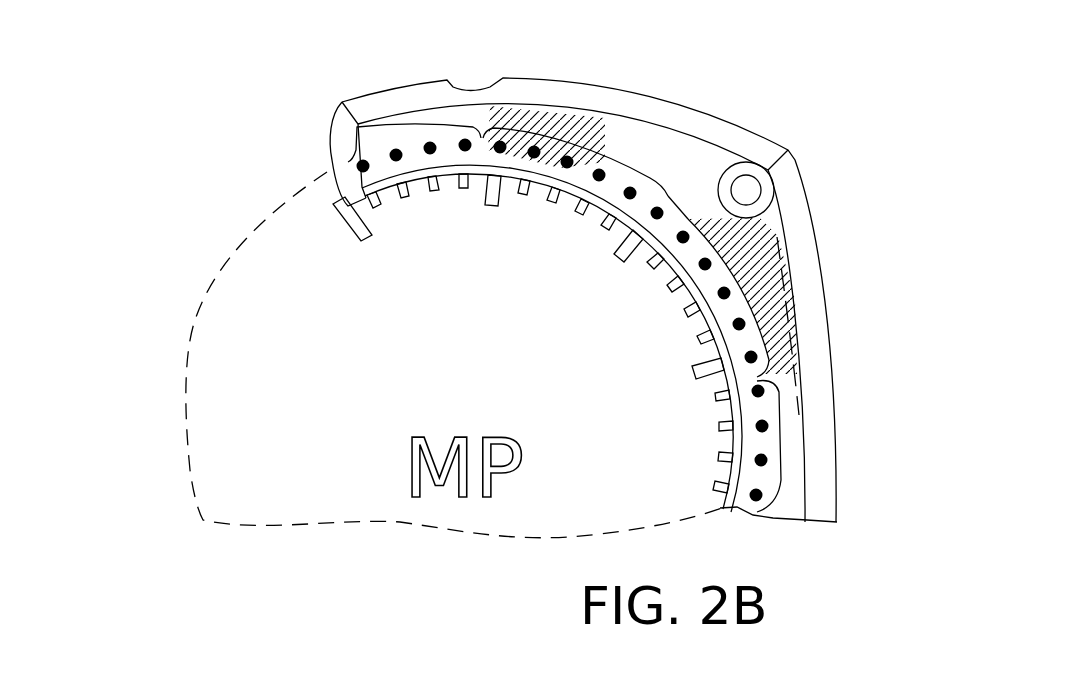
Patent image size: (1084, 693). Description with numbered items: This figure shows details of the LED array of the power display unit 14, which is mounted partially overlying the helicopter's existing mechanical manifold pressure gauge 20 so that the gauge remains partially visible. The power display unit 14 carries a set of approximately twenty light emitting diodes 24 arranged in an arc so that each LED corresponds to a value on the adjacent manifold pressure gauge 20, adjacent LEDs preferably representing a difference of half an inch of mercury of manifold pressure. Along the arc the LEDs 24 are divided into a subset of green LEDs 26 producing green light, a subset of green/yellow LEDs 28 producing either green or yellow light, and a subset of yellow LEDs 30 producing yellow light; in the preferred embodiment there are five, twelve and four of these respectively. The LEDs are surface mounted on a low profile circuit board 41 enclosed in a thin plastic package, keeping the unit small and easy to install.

The power display unit 14 is at (653, 140).
The manifold pressure gauge 20 is at (192, 340).
The light emitting diodes 24 is at (563, 310).
The green LEDs 26 is at (395, 125).
The green/yellow LEDs 28 is at (666, 186).
The yellow LEDs 30 is at (783, 453).
The low profile circuit board 41 is at (783, 293).